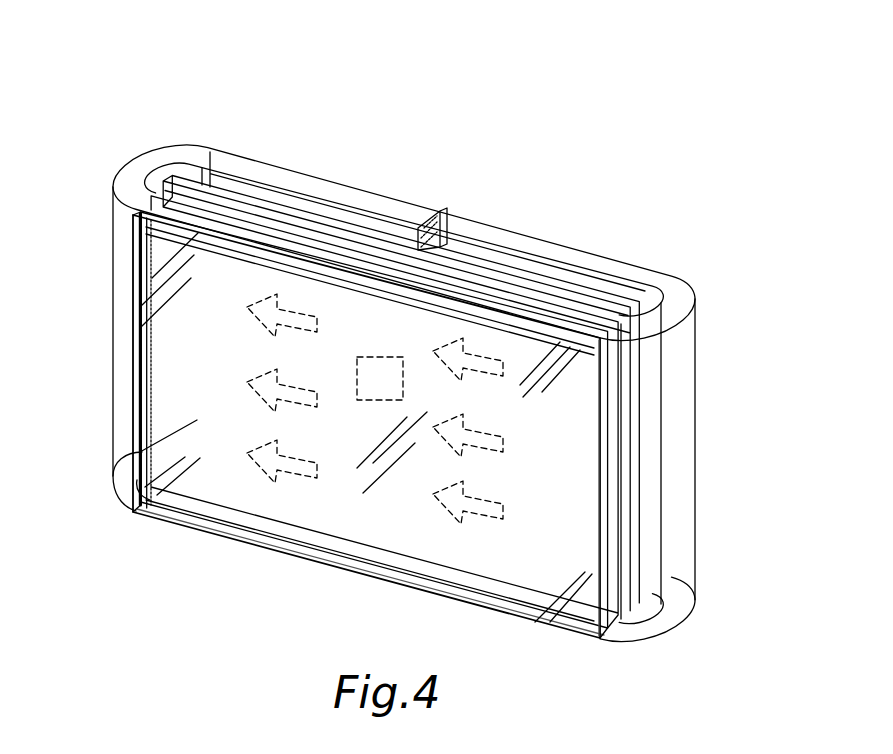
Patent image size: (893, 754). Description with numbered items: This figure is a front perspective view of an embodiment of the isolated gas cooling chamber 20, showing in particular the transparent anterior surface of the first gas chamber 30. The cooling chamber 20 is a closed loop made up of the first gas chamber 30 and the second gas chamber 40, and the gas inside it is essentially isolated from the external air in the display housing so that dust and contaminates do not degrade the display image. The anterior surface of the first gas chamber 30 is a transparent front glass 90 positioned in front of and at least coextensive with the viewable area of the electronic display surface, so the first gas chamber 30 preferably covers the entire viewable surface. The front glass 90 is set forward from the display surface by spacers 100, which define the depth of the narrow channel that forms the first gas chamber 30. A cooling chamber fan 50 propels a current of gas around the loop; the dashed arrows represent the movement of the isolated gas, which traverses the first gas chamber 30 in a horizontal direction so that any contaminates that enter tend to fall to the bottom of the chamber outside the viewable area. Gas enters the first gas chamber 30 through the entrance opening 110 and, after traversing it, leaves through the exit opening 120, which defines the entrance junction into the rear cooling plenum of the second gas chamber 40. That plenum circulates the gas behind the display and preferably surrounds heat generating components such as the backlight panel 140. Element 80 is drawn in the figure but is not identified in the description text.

The isolated gas cooling chamber 20 is at (419, 338).
The first gas chamber 30 is at (380, 378).
The second gas chamber 40 is at (358, 193).
The cooling chamber fan 50 is at (433, 209).
The back plate 80 is at (159, 197).
The front glass 90 is at (298, 558).
The spacers 100 is at (517, 595).
The entrance opening 110 is at (597, 472).
The exit opening 120 is at (144, 340).
The backlight panel 140 is at (257, 197).